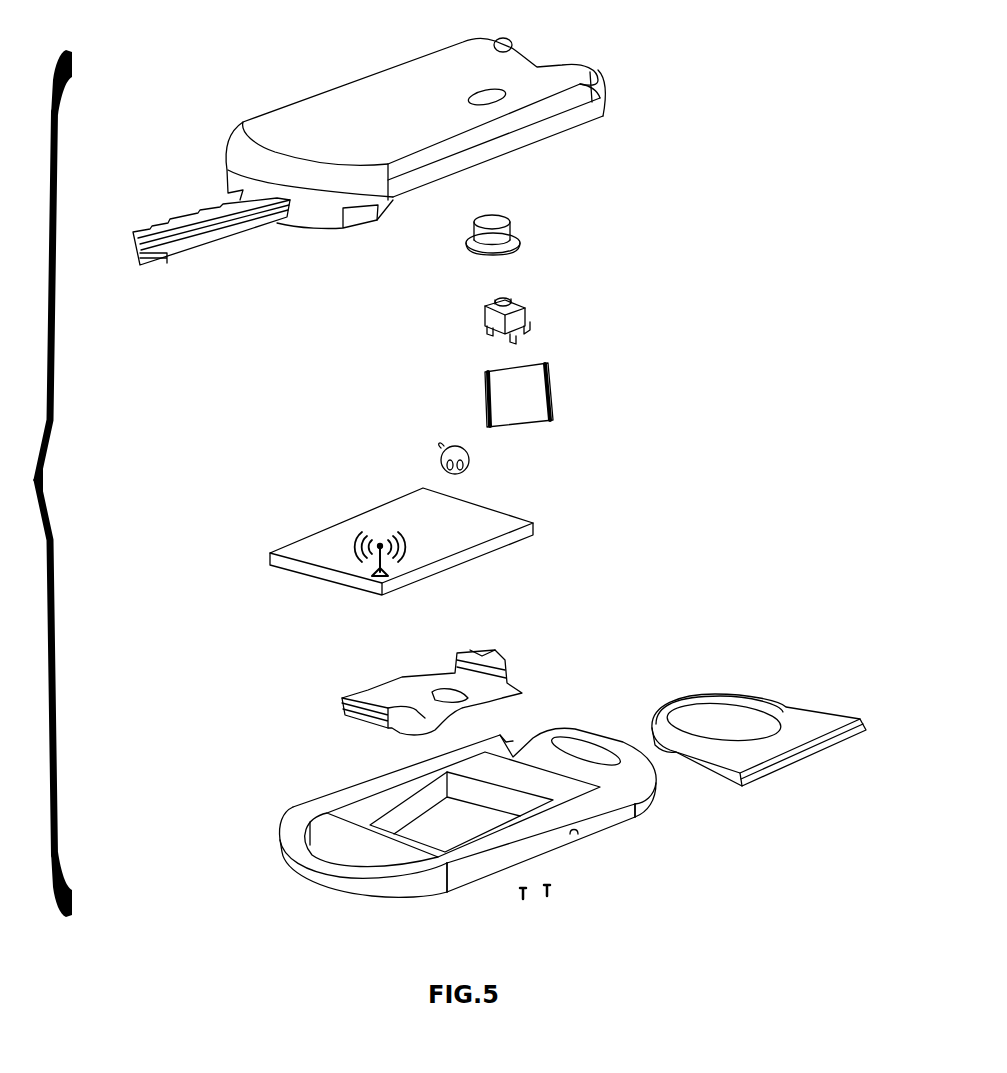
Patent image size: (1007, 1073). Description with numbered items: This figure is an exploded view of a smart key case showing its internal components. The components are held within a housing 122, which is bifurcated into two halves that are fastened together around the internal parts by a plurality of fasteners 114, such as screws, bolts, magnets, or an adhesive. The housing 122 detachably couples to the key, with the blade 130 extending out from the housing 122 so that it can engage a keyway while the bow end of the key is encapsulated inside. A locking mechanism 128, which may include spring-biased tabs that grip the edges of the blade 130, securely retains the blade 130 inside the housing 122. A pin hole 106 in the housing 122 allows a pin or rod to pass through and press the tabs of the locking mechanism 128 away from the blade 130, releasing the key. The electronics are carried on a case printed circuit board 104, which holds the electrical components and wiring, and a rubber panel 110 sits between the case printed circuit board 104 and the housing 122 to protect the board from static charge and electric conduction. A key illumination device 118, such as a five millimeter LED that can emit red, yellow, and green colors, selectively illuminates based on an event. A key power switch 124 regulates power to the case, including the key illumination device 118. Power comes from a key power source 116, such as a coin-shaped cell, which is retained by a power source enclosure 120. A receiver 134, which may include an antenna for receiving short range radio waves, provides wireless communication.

The case printed circuit board 104 is at (547, 524).
The pin hole 106 is at (400, 130).
The rubber panel 110 is at (553, 378).
The fasteners 114 is at (552, 888).
The key power source 116 is at (759, 738).
The key illumination device 118 is at (440, 447).
The power source enclosure 120 is at (688, 767).
The housing 122 is at (607, 83).
The key power switch 124 is at (520, 225).
The locking mechanism 128 is at (522, 693).
The blade 130 is at (190, 257).
The receiver 134 is at (530, 318).